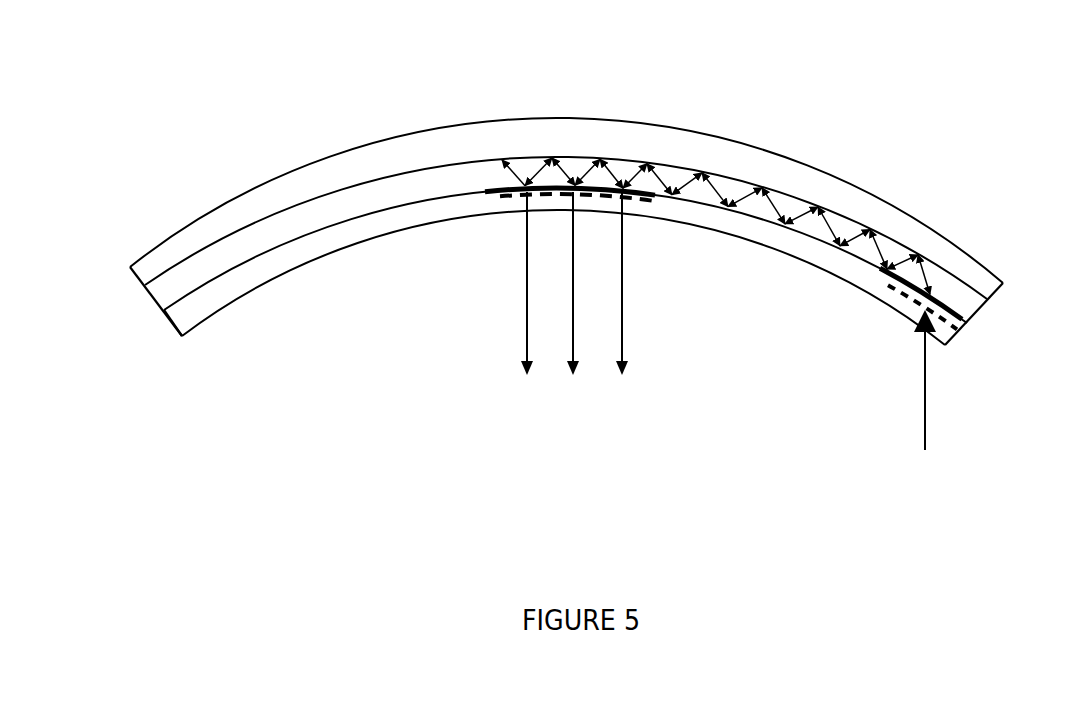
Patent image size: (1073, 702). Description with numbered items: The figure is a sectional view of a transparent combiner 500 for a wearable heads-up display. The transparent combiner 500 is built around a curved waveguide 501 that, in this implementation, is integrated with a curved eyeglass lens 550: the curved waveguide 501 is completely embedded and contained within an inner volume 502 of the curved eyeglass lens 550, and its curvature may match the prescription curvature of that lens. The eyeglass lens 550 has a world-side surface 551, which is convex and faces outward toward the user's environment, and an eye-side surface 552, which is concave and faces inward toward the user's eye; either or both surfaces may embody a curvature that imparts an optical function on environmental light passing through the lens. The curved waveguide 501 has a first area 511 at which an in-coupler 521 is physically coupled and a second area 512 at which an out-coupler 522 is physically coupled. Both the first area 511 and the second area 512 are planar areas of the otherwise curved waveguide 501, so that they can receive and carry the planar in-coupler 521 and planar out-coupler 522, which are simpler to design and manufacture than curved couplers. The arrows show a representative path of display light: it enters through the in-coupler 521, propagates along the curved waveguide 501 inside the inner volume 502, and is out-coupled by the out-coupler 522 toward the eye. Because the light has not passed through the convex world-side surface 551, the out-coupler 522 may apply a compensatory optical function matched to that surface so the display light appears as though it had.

The transparent combiner 500 is at (139, 117).
The curved waveguide 501 is at (157, 303).
The inner volume 502 is at (543, 148).
The first area 511 is at (940, 297).
The second area 512 is at (563, 187).
The in-coupler 521 is at (957, 330).
The out-coupler 522 is at (507, 199).
The curved eyeglass lens 550 is at (173, 331).
The world-side surface 551 is at (323, 160).
The eye-side surface 552 is at (330, 253).